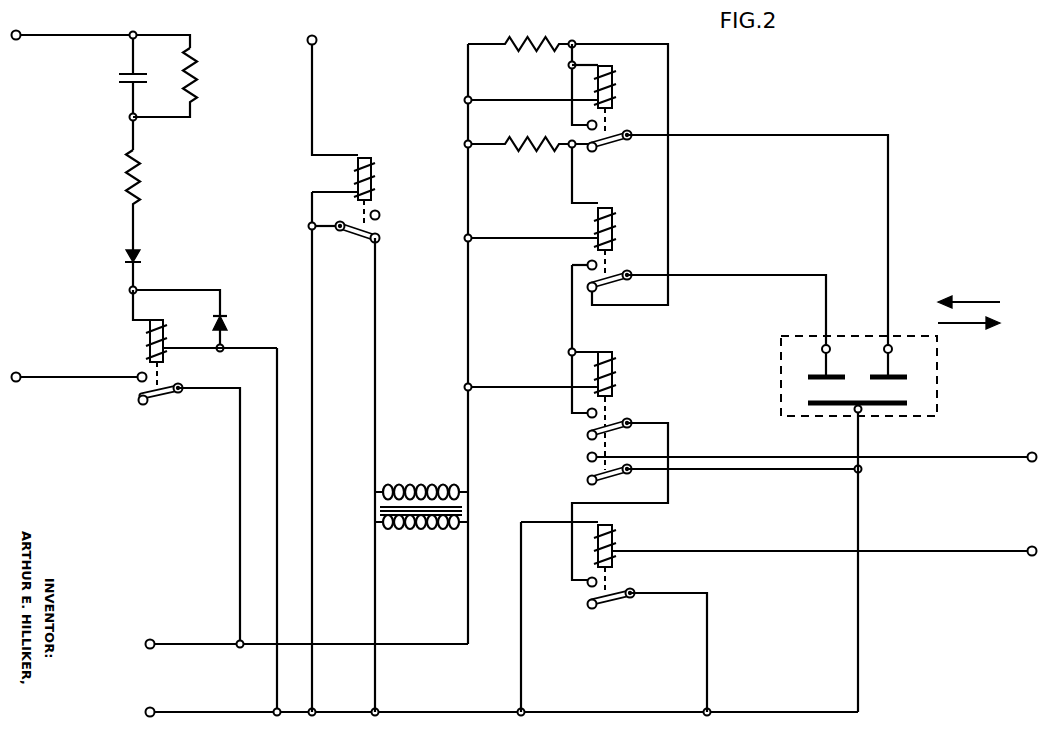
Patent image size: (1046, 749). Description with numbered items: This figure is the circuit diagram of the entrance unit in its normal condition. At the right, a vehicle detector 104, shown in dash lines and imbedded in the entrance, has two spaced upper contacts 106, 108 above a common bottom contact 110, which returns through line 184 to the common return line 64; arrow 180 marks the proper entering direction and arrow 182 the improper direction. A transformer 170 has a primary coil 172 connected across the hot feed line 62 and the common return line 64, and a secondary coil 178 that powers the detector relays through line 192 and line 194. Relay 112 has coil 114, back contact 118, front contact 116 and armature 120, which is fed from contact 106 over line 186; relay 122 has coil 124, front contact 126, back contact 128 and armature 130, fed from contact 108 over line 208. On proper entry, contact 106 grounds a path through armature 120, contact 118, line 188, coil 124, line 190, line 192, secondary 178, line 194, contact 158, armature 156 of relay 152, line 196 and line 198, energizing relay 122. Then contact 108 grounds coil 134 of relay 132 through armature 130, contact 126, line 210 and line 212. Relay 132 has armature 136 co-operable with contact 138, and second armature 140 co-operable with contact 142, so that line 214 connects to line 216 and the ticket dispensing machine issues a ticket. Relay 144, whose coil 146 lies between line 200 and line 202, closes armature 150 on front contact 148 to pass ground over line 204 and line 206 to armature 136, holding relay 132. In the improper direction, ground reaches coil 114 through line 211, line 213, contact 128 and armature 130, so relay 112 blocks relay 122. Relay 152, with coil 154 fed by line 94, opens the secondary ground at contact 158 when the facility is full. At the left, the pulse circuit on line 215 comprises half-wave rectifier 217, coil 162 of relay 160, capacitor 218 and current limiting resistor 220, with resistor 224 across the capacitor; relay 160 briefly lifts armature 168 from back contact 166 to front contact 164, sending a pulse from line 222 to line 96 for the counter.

The hot feed line 62 is at (209, 644).
The common return line 64 is at (224, 712).
The line 94 is at (312, 72).
The line 96 is at (70, 376).
The vehicle detector 104 is at (800, 336).
The upper contact 106 is at (905, 372).
The upper contact 108 is at (808, 368).
The bottom contact 110 is at (900, 400).
The relay 112 is at (614, 72).
The coil 114 is at (614, 85).
The front contact 116 is at (603, 120).
The back contact 118 is at (599, 152).
The armature 120 is at (633, 143).
The relay 122 is at (621, 213).
The coil 124 is at (617, 226).
The front contact 126 is at (588, 262).
The back contact 128 is at (604, 290).
The armature 130 is at (624, 271).
The relay 132 is at (621, 358).
The coil 134 is at (615, 372).
The armature 136 is at (622, 420).
The contact 138 is at (585, 416).
The second armature 140 is at (615, 486).
The contact 142 is at (587, 457).
The relay 144 is at (623, 532).
The coil 146 is at (620, 542).
The front contact 148 is at (585, 588).
The armature 150 is at (612, 602).
The relay 152 is at (378, 164).
The coil 154 is at (372, 178).
The armature 156 is at (353, 238).
The contact 158 is at (381, 240).
The relay 160 is at (179, 328).
The coil 162 is at (147, 331).
The front contact 164 is at (139, 373).
The back contact 166 is at (148, 404).
The armature 168 is at (163, 394).
The transformer 170 is at (338, 520).
The primary coil 172 is at (418, 533).
The secondary coil 178 is at (420, 485).
The arrow 180 is at (955, 302).
The arrow 182 is at (970, 326).
The line 184 is at (860, 660).
The line 186 is at (888, 218).
The line 188 is at (582, 160).
The line 190 is at (510, 238).
The line 192 is at (468, 290).
The line 194 is at (375, 318).
The line 196 is at (325, 226).
The line 198 is at (312, 318).
The line 200 is at (970, 551).
The line 202 is at (522, 672).
The line 204 is at (672, 490).
The line 206 is at (708, 668).
The line 208 is at (772, 275).
The line 210 is at (572, 296).
The line 211 is at (533, 98).
The line 212 is at (519, 387).
The line 213 is at (672, 182).
The line 214 is at (810, 477).
The line 215 is at (63, 35).
The line 216 is at (926, 461).
The half-wave rectifier 217 is at (145, 259).
The capacitor 218 is at (118, 78).
The current limiting resistor 220 is at (144, 176).
The line 222 is at (240, 520).
The resistor 224 is at (199, 76).